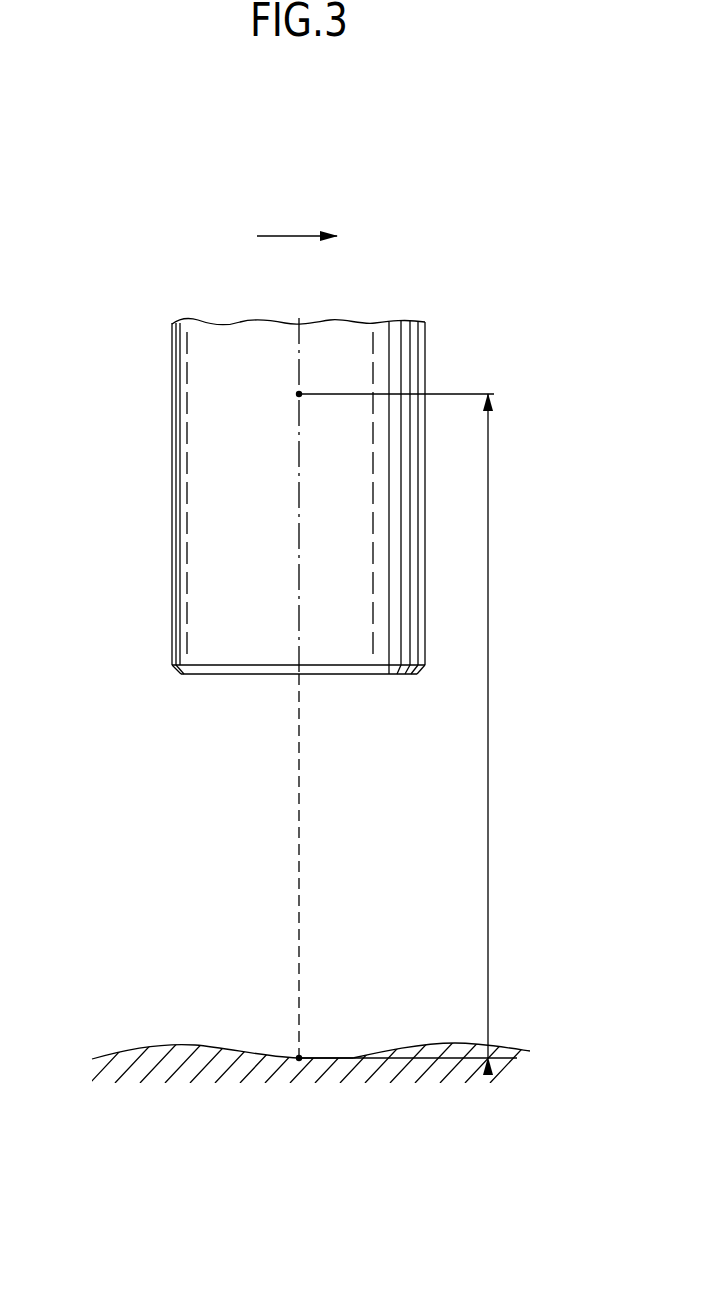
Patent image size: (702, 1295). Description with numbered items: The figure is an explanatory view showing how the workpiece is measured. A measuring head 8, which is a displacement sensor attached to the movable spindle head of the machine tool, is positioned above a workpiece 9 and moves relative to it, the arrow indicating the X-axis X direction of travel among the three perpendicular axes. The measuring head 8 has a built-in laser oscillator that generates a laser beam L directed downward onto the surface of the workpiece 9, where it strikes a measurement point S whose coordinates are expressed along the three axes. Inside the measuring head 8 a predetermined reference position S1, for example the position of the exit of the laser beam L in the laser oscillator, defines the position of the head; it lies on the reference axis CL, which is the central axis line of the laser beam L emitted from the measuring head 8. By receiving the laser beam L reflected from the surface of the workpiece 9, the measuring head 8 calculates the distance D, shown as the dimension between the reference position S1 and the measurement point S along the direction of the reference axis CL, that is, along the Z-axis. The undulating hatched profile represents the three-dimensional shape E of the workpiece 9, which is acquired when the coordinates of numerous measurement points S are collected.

The measuring head 8 is at (426, 342).
The workpiece 9 is at (143, 1046).
The three-dimensional shape E is at (196, 1045).
The X-axis X is at (289, 236).
The reference position S1 is at (300, 396).
The measurement point S is at (302, 1056).
The reference axis CL is at (298, 523).
The laser beam L is at (302, 841).
The distance D is at (505, 726).